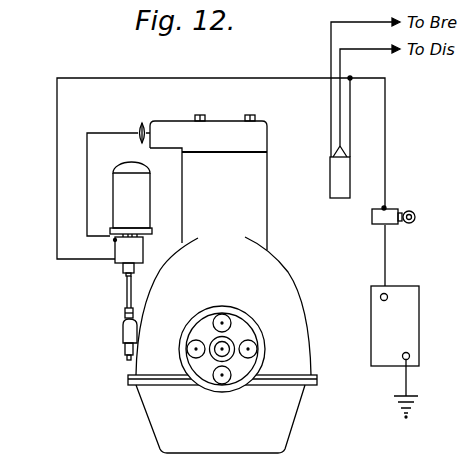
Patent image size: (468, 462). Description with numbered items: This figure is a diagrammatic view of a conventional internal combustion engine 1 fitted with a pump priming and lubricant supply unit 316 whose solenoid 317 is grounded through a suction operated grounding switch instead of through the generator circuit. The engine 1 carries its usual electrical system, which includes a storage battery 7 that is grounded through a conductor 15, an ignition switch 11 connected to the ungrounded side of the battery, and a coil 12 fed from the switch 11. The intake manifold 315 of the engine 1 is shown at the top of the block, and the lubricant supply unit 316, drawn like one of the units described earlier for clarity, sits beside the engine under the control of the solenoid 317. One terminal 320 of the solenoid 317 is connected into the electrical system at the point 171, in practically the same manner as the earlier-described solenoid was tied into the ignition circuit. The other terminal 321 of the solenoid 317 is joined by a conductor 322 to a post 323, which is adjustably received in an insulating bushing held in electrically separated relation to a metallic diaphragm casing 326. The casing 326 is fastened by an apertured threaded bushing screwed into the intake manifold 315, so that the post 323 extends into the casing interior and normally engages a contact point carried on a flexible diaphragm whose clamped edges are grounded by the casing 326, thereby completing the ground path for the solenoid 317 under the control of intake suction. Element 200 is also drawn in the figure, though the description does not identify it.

The internal combustion engine 1 is at (286, 266).
The storage battery 7 is at (381, 324).
The ignition switch 11 is at (392, 207).
The coil 12 is at (330, 178).
The conductor 15 is at (406, 382).
The point 171 is at (351, 78).
The spark plug 200 is at (122, 326).
The intake manifold 315 is at (165, 127).
The pump priming and lubricant supply unit 316 is at (118, 200).
The solenoid 317 is at (135, 250).
The terminal 320 is at (117, 264).
The terminal 321 is at (114, 241).
The conductor 322 is at (87, 153).
The post 323 is at (137, 131).
The diaphragm casing 326 is at (139, 125).